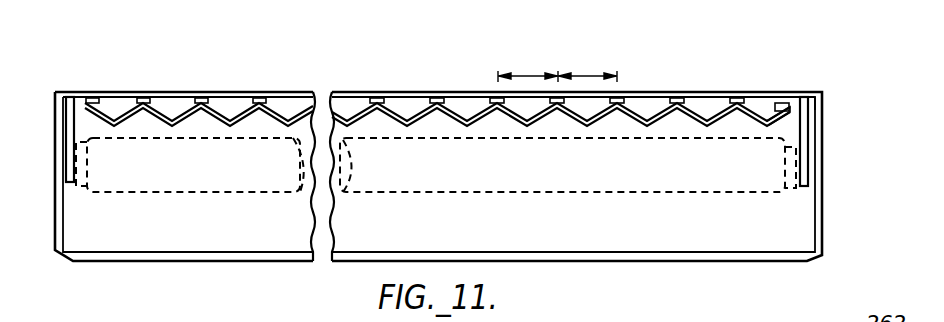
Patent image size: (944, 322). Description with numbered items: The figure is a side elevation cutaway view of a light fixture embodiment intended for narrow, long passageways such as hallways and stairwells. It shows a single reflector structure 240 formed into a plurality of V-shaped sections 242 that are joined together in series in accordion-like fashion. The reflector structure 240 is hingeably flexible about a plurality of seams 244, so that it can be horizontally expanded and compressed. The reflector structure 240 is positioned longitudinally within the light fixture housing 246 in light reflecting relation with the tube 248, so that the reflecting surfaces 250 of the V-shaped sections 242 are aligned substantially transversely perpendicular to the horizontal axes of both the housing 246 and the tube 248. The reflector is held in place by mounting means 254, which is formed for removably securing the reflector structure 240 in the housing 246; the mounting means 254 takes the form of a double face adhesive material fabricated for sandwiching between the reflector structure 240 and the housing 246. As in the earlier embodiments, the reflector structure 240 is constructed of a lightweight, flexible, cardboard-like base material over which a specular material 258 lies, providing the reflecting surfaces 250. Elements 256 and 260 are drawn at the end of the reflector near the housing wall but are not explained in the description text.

The reflector structure 240 is at (806, 65).
The V-shaped sections 242 is at (530, 76).
The seams 244 is at (410, 123).
The light fixture housing 246 is at (822, 192).
The tube 248 is at (657, 193).
The reflecting surfaces 250 is at (547, 115).
The mounting means 254 is at (786, 96).
The end portion 256 is at (771, 120).
The specular material 258 is at (784, 115).
The corner portion 260 is at (790, 104).